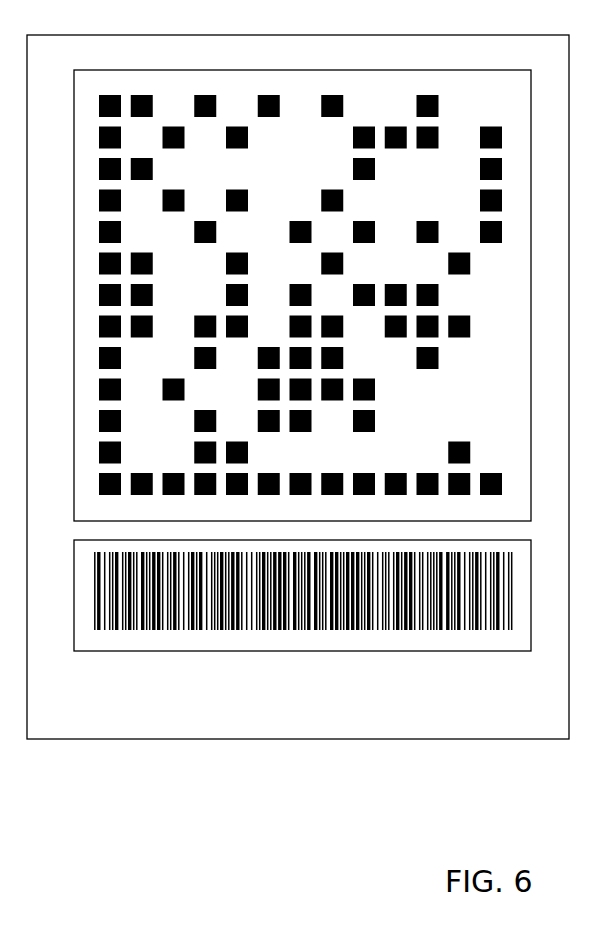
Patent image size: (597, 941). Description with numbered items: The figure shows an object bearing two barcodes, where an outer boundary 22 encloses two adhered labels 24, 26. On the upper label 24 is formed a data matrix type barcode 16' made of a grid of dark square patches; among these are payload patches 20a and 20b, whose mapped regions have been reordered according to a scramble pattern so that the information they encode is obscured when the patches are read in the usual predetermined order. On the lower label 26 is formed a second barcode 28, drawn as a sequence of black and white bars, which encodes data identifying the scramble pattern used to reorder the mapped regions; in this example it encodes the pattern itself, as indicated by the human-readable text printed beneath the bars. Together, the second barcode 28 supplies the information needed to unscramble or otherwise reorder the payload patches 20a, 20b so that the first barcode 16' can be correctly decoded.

The label 22 is at (92, 35).
The label 24 is at (74, 118).
The barcode 16' is at (300, 287).
The payload patch 20a is at (244, 187).
The payload patch 20b is at (492, 450).
The label 26 is at (74, 578).
The barcode 28 is at (132, 632).